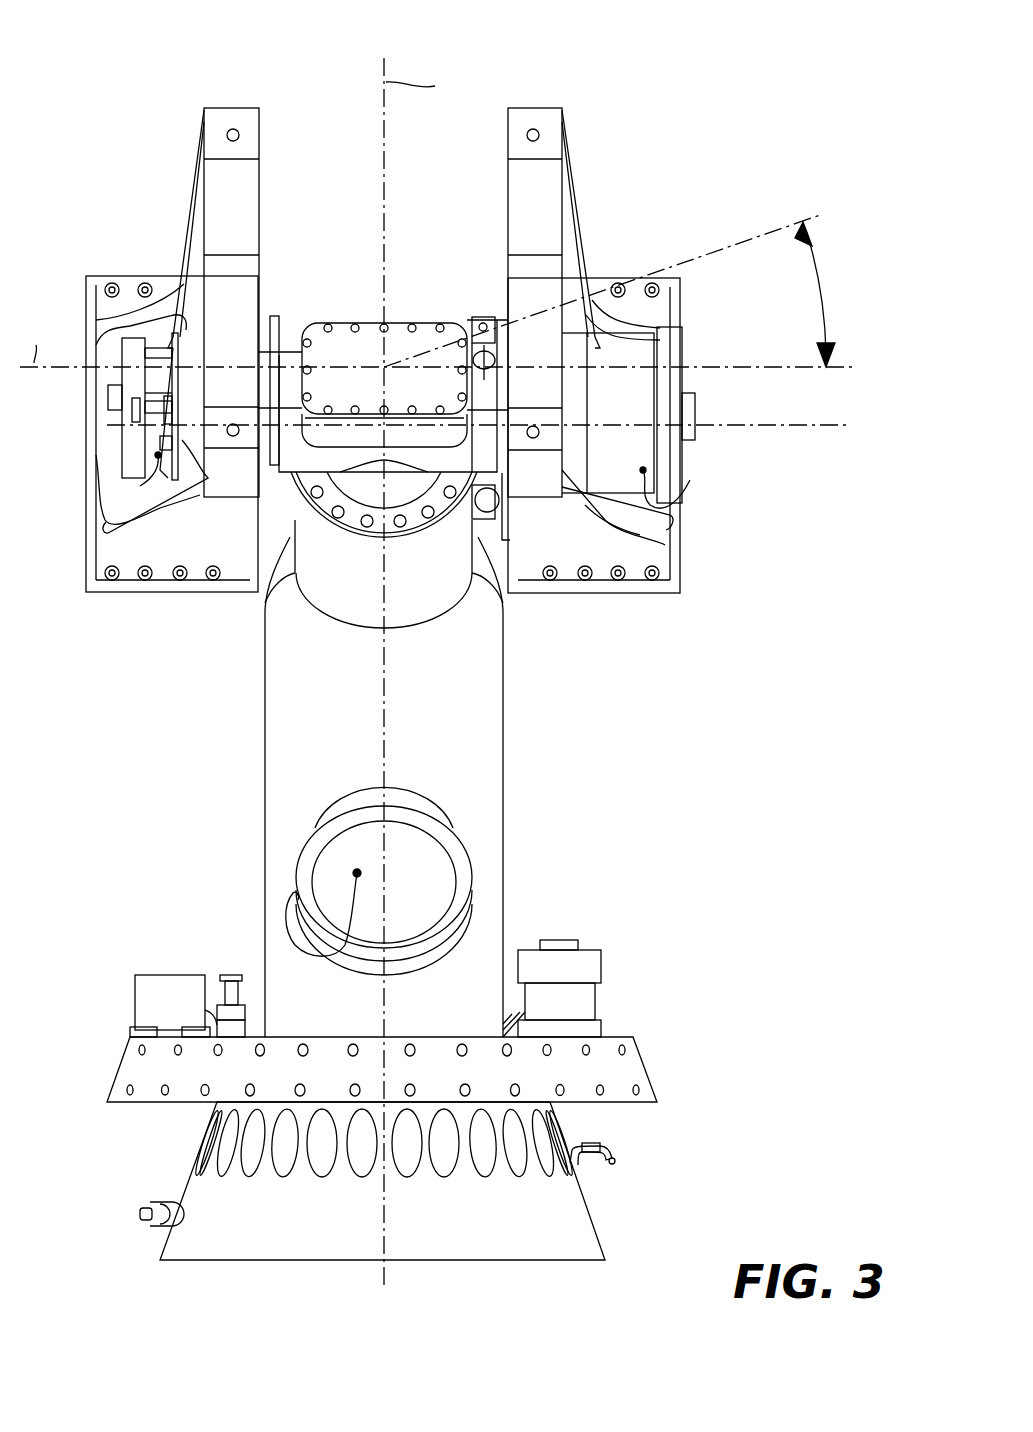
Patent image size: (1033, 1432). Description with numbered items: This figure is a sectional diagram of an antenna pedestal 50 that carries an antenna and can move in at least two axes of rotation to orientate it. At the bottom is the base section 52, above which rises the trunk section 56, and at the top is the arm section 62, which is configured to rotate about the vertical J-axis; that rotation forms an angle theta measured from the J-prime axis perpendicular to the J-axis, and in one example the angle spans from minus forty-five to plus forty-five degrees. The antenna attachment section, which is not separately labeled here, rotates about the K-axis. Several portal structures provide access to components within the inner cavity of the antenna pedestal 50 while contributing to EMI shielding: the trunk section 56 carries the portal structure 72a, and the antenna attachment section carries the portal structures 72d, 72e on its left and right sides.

The antenna pedestal 50 is at (232, 49).
The base section 52 is at (565, 1220).
The trunk section 56 is at (277, 695).
The arm section 62 is at (342, 588).
The portal structure 72a is at (316, 848).
The portal structure 72d is at (130, 433).
The portal structure 72e is at (668, 453).